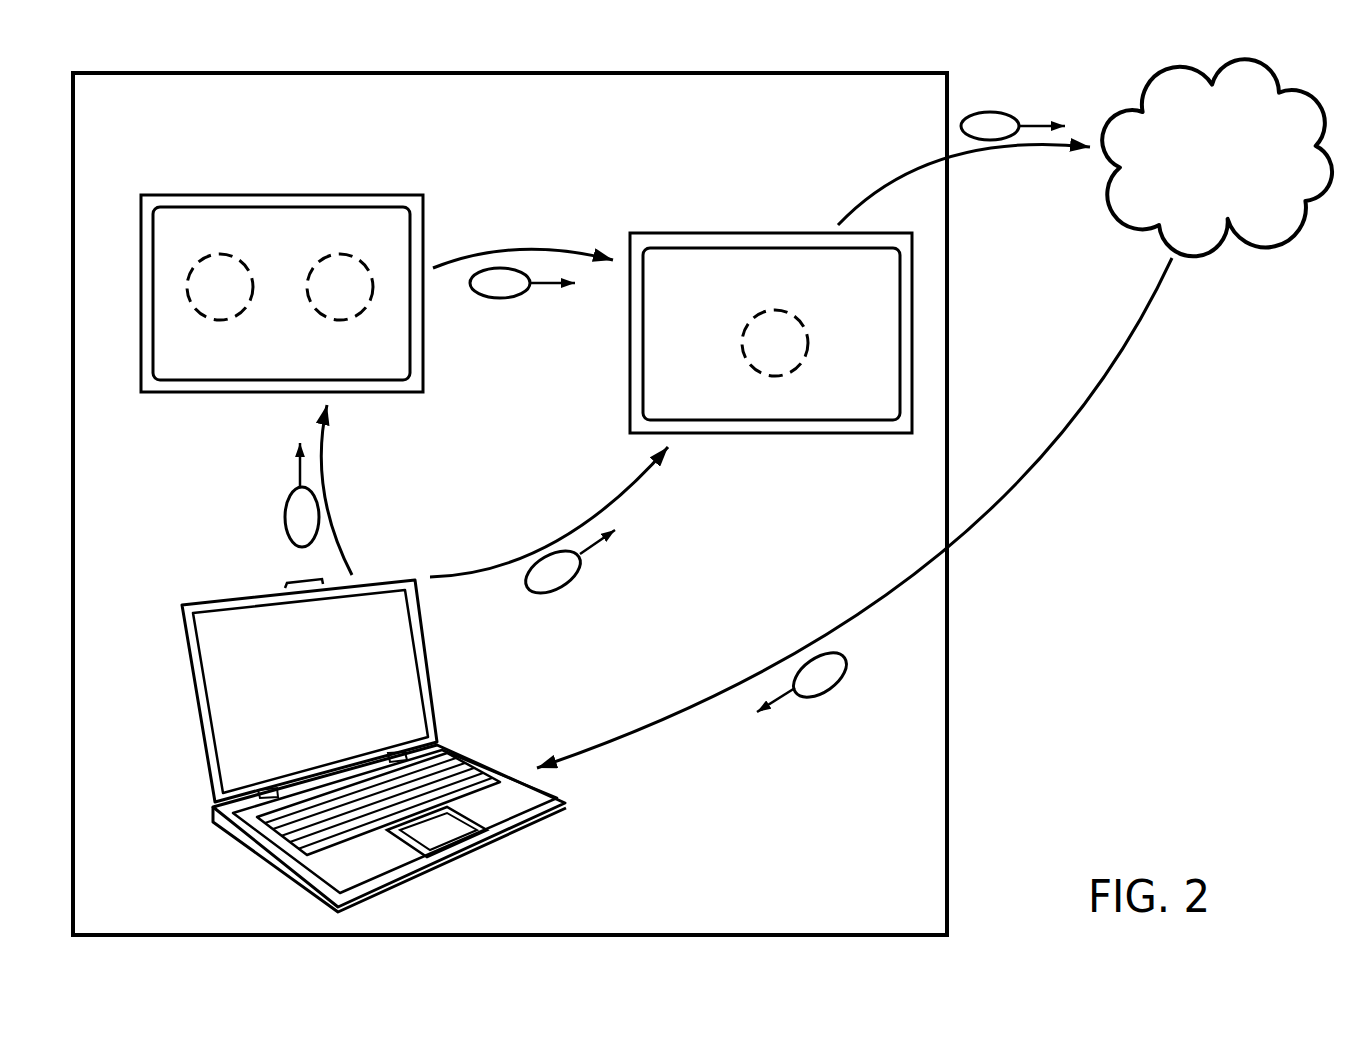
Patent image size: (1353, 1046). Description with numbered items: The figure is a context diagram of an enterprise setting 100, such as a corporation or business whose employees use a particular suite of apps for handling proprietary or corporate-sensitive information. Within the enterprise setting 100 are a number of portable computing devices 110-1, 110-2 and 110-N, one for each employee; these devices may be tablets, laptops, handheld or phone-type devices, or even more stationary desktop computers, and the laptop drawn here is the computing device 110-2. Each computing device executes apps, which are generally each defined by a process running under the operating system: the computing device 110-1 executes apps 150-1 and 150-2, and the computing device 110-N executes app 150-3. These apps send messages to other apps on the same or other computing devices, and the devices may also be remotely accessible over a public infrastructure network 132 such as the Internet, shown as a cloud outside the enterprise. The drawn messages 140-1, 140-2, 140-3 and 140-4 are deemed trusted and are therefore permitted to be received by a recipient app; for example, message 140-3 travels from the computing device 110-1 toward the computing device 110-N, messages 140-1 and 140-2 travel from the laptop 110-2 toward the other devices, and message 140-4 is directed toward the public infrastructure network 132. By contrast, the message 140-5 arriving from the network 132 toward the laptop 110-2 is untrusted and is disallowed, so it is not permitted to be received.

The enterprise setting 100 is at (721, 111).
The portable computing device 110-1 is at (225, 195).
The portable computing device 110-2 is at (267, 862).
The portable computing device 110-N is at (775, 233).
The public infrastructure network 132 is at (1242, 181).
The message 140-1 is at (285, 518).
The message 140-2 is at (563, 582).
The message 140-3 is at (510, 298).
The message 140-4 is at (988, 112).
The untrusted message 140-5 is at (833, 688).
The app 150-1 is at (225, 320).
The app 150-2 is at (340, 320).
The app 150-3 is at (775, 376).